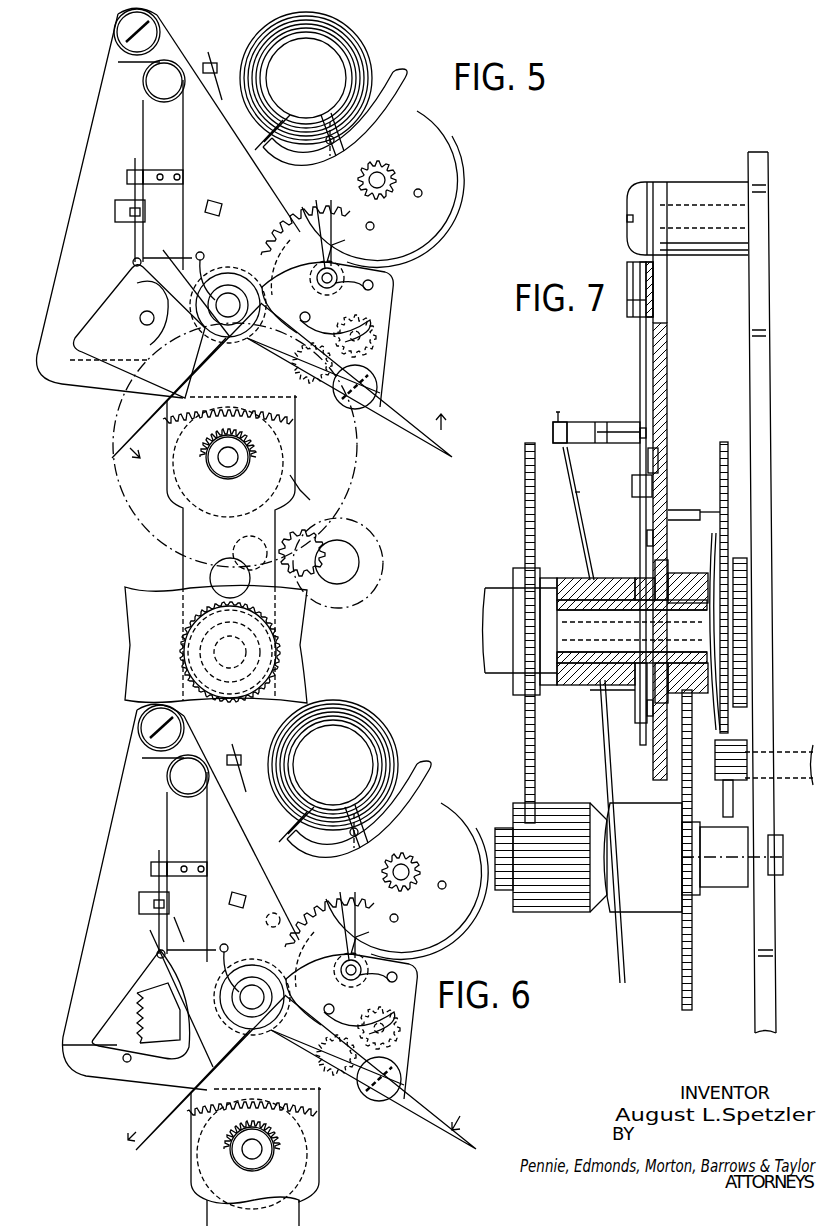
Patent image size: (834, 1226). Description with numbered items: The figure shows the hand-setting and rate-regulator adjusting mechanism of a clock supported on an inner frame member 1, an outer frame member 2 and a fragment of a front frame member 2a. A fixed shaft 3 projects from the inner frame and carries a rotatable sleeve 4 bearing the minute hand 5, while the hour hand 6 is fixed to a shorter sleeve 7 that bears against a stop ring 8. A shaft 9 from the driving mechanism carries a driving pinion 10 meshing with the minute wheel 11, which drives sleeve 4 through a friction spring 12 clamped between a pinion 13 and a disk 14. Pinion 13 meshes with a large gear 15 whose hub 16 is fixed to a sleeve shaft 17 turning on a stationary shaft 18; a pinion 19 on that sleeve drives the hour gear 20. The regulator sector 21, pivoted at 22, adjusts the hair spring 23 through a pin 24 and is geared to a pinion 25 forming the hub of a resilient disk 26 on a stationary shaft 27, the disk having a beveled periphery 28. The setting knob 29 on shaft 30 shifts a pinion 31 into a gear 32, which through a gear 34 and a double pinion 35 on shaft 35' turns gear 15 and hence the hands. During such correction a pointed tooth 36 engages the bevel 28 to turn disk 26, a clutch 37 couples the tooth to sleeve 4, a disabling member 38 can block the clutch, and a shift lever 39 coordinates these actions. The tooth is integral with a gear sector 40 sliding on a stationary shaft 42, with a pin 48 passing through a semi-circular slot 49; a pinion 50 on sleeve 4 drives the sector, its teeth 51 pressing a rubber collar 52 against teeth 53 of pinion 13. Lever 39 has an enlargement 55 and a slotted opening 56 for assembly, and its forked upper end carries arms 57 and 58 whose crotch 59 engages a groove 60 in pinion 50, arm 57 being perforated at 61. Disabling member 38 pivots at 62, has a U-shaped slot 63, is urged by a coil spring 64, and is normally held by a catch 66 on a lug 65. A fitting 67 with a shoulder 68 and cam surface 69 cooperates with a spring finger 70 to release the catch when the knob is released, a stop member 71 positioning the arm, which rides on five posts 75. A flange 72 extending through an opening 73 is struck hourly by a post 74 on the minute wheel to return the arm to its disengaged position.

In FIG. 7, the inner frame member 1 is at (770, 314).
In FIG. 5, the outer frame member 2 is at (210, 126).
In FIG. 6, the outer frame member 2 is at (164, 897).
In FIG. 7, the outer frame member 2 is at (668, 378).
In FIG. 5, the front frame member 2a is at (135, 605).
In FIG. 5, the fixed post or shaft 3 is at (229, 293).
In FIG. 6, the fixed post or shaft 3 is at (252, 984).
In FIG. 7, the fixed post or shaft 3 is at (637, 637).
In FIG. 5, the sleeve 4 is at (222, 285).
In FIG. 6, the sleeve 4 is at (265, 981).
In FIG. 7, the sleeve 4 is at (595, 612).
In FIG. 5, the minute hand 5 is at (400, 420).
In FIG. 6, the minute hand 5 is at (373, 1072).
In FIG. 5, the hour hand 6 is at (122, 432).
In FIG. 6, the hour hand 6 is at (205, 1072).
In FIG. 7, the sleeve 7 is at (500, 590).
In FIG. 7, the stop ring 8 is at (552, 685).
In FIG. 7, the shaft 9 is at (792, 780).
In FIG. 5, the driving pinion 10 is at (378, 338).
In FIG. 6, the driving pinion 10 is at (399, 1028).
In FIG. 7, the driving pinion 10 is at (722, 765).
In FIG. 5, the minute gear or wheel 11 is at (318, 368).
In FIG. 6, the minute gear or wheel 11 is at (333, 1055).
In FIG. 7, the minute gear or wheel 11 is at (728, 470).
In FIG. 7, the friction spring 12 is at (700, 700).
In FIG. 7, the pinion 13 is at (718, 560).
In FIG. 7, the disk 14 is at (745, 590).
In FIG. 5, the large gear 15 is at (302, 490).
In FIG. 7, the large gear 15 is at (682, 972).
In FIG. 7, the hub 16 is at (652, 898).
In FIG. 7, the sleeve shaft 17 is at (722, 888).
In FIG. 5, the stationary shaft 18 is at (222, 462).
In FIG. 6, the stationary shaft 18 is at (232, 1166).
In FIG. 7, the stationary shaft 18 is at (500, 830).
In FIG. 5, the pinion 19 is at (249, 440).
In FIG. 6, the pinion 19 is at (233, 1149).
In FIG. 7, the pinion 19 is at (565, 900).
In FIG. 5, the hour gear 20 is at (185, 435).
In FIG. 6, the hour gear 20 is at (249, 1154).
In FIG. 7, the hour gear 20 is at (525, 762).
In FIG. 5, the sector 21 is at (405, 72).
In FIG. 6, the sector 21 is at (369, 795).
In FIG. 5, the pivot 22 is at (296, 62).
In FIG. 6, the pivot 22 is at (333, 765).
In FIG. 5, the hair spring 23 is at (352, 32).
In FIG. 6, the hair spring 23 is at (338, 763).
In FIG. 7, the hair spring 23 is at (687, 218).
In FIG. 5, the pin 24 is at (330, 120).
In FIG. 6, the pin 24 is at (340, 819).
In FIG. 5, the pinion 25 is at (375, 192).
In FIG. 6, the pinion 25 is at (382, 902).
In FIG. 5, the disk shaped member 26 is at (455, 192).
In FIG. 6, the disk shaped member 26 is at (429, 870).
In FIG. 5, the stationary shaft 27 is at (396, 180).
In FIG. 6, the stationary shaft 27 is at (420, 872).
In FIG. 5, the beveled periphery 28 is at (457, 150).
In FIG. 6, the beveled periphery 28 is at (411, 878).
In FIG. 5, the setting knob 29 is at (256, 656).
In FIG. 5, the shaft 30 is at (247, 664).
In FIG. 5, the pinion 31 is at (182, 655).
In FIG. 5, the gear 32 is at (285, 618).
In FIG. 5, the gear 34 is at (285, 548).
In FIG. 5, the double pinion 35 is at (349, 543).
In FIG. 5, the short stationary shaft 35' is at (349, 563).
In FIG. 5, the tooth 36 is at (345, 262).
In FIG. 6, the tooth 36 is at (366, 932).
In FIG. 7, the clutch mechanism 37 is at (640, 705).
In FIG. 5, the disabling member 38 is at (190, 200).
In FIG. 6, the disabling member 38 is at (237, 867).
In FIG. 7, the disabling member 38 is at (640, 380).
In FIG. 5, the shift lever 39 is at (183, 520).
In FIG. 6, the shift lever 39 is at (276, 1183).
In FIG. 7, the shift lever 39 is at (612, 955).
In FIG. 5, the sector shaped operating gear 40 is at (290, 224).
In FIG. 6, the sector shaped operating gear 40 is at (325, 934).
In FIG. 5, the stationary shaft 42 is at (373, 288).
In FIG. 6, the stationary shaft 42 is at (401, 967).
In FIG. 5, the pin 48 is at (305, 338).
In FIG. 6, the pin 48 is at (277, 1007).
In FIG. 5, the semi-circular slot 49 is at (372, 318).
In FIG. 6, the semi-circular slot 49 is at (381, 1017).
In FIG. 7, the pinion 50 is at (605, 578).
In FIG. 7, the teeth 51 is at (640, 580).
In FIG. 5, the flexible resilient collar or washer 52 is at (257, 276).
In FIG. 6, the flexible resilient collar or washer 52 is at (252, 980).
In FIG. 7, the flexible resilient collar or washer 52 is at (655, 565).
In FIG. 7, the teeth 53 is at (675, 573).
In FIG. 5, the circular enlargement 55 is at (227, 560).
In FIG. 5, the second slotted opening 56 is at (262, 418).
In FIG. 6, the second slotted opening 56 is at (265, 1116).
In FIG. 5, the arm 57 is at (392, 282).
In FIG. 6, the arm 57 is at (382, 1026).
In FIG. 5, the arm 58 is at (115, 208).
In FIG. 6, the arm 58 is at (135, 893).
In FIG. 7, the arm 58 is at (585, 535).
In FIG. 5, the crotch portion 59 is at (240, 395).
In FIG. 6, the crotch portion 59 is at (256, 1122).
In FIG. 7, the crotch portion 59 is at (595, 690).
In FIG. 7, the groove 60 is at (590, 690).
In FIG. 5, the perforation 61 is at (326, 262).
In FIG. 6, the perforation 61 is at (335, 942).
In FIG. 5, the pivot 62 is at (150, 86).
In FIG. 6, the pivot 62 is at (170, 781).
In FIG. 7, the pivot 62 is at (632, 313).
In FIG. 5, the U-shaped slot 63 is at (158, 330).
In FIG. 7, the U-shaped slot 63 is at (641, 695).
In FIG. 5, the coil spring 64 is at (137, 60).
In FIG. 6, the coil spring 64 is at (155, 747).
In FIG. 7, the coil spring 64 is at (653, 292).
In FIG. 7, the lug 65 is at (658, 460).
In FIG. 6, the catch 66 is at (189, 929).
In FIG. 7, the catch 66 is at (648, 434).
In FIG. 5, the shouldered fitting 67 is at (181, 172).
In FIG. 6, the shouldered fitting 67 is at (192, 855).
In FIG. 7, the shouldered fitting 67 is at (627, 422).
In FIG. 7, the horizontal shoulder 68 is at (620, 443).
In FIG. 5, the sloping cam surface 69 is at (127, 178).
In FIG. 6, the sloping cam surface 69 is at (165, 853).
In FIG. 7, the sloping cam surface 69 is at (553, 432).
In FIG. 5, the spring finger 70 is at (133, 162).
In FIG. 6, the spring finger 70 is at (142, 904).
In FIG. 7, the spring finger 70 is at (556, 414).
In FIG. 5, the stop member 71 is at (224, 205).
In FIG. 6, the stop member 71 is at (250, 887).
In FIG. 7, the stop member 71 is at (632, 487).
In FIG. 5, the flange 72 is at (90, 320).
In FIG. 6, the flange 72 is at (140, 1004).
In FIG. 7, the flange 72 is at (680, 510).
In FIG. 5, the opening 73 is at (80, 330).
In FIG. 6, the opening 73 is at (97, 1059).
In FIG. 5, the pin or post 74 is at (153, 314).
In FIG. 6, the pin or post 74 is at (265, 911).
In FIG. 7, the pin or post 74 is at (722, 516).
In FIG. 5, the stationary posts or pins 75 is at (206, 240).
In FIG. 6, the stationary posts or pins 75 is at (165, 1006).
In FIG. 7, the stationary posts or pins 75 is at (654, 540).